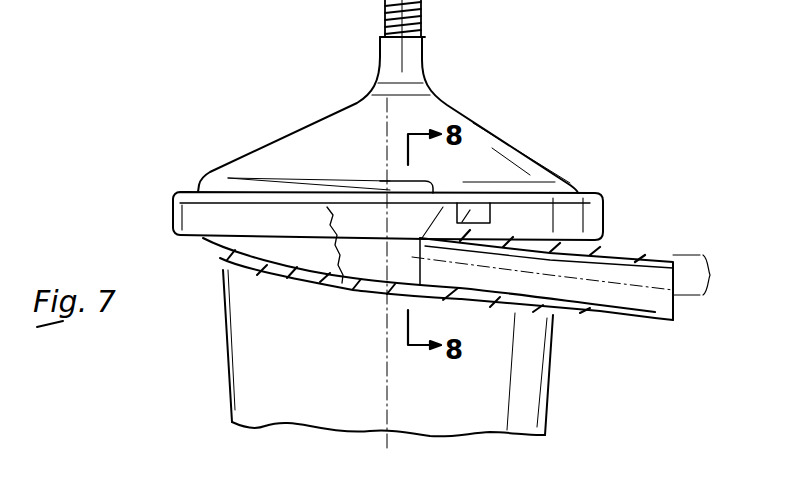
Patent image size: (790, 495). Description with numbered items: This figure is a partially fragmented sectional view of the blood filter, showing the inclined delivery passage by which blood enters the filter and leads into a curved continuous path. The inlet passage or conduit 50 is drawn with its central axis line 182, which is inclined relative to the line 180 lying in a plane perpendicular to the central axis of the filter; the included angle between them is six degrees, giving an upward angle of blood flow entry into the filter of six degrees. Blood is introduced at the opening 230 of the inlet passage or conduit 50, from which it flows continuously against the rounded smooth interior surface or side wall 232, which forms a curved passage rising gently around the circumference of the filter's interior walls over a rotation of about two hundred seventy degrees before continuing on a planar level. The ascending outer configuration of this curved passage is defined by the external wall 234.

The inlet passage or conduit 50 is at (595, 318).
The line in a plane perpendicular to the central axis 180 is at (620, 251).
The central axis line of the inlet delivery passage 182 is at (655, 322).
The opening of the inlet passage 230 is at (420, 247).
The rounded smooth interior surface or side wall 232 is at (343, 297).
The external wall 234 is at (260, 277).